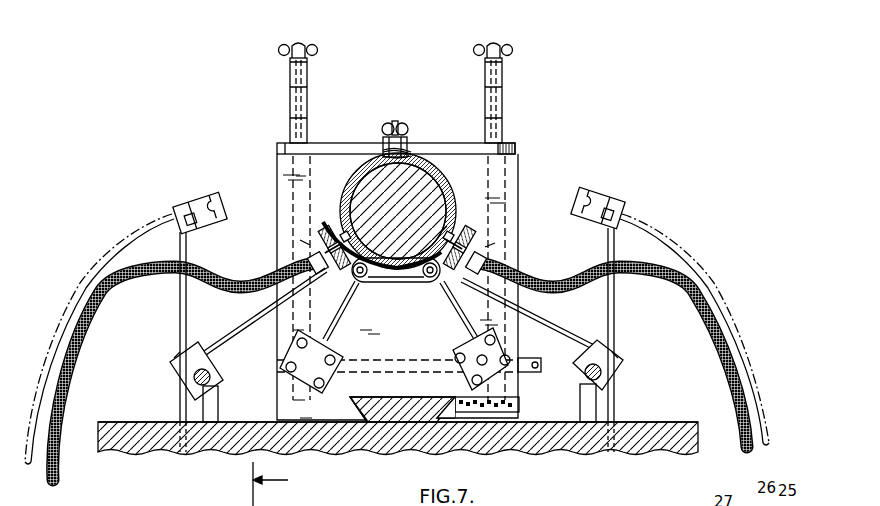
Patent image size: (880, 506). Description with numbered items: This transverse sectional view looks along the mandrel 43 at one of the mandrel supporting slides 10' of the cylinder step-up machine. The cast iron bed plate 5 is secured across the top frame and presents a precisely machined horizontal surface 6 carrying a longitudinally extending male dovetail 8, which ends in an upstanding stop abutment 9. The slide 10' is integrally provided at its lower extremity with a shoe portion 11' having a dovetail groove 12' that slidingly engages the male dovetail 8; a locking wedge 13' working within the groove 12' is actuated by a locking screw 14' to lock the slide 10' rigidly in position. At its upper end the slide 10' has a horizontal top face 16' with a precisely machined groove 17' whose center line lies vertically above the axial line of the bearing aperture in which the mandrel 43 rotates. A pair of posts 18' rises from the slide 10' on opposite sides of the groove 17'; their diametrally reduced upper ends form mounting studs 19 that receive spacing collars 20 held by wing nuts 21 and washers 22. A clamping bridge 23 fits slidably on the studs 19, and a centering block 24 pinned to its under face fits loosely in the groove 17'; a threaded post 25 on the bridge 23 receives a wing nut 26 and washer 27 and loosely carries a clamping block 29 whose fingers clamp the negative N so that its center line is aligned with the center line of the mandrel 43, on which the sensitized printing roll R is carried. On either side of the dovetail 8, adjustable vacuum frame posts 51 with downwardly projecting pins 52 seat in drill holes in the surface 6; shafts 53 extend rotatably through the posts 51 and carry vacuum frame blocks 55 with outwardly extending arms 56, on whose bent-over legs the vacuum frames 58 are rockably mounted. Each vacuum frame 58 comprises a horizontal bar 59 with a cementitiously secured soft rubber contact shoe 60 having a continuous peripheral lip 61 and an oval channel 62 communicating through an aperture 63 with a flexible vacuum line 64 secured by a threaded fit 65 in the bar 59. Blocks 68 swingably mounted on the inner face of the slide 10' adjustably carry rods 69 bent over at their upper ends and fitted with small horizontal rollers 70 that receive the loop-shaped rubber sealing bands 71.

The bed plate 5 is at (143, 455).
The horizontal surface 6 is at (140, 422).
The male dovetail 8 is at (402, 400).
The stop abutment 9 is at (277, 484).
The mandrel supporting slide 10' is at (421, 284).
The shoe portion 11' is at (533, 378).
The dovetail groove 12' is at (362, 444).
The locking wedge 13' is at (473, 437).
The locking screw 14' is at (510, 408).
The horizontal top face 16' is at (532, 139).
The groove 17' is at (426, 134).
The post 18' is at (393, 239).
The mounting stud 19 is at (299, 42).
The spacing collar 20 is at (296, 128).
The wing nut 21 is at (279, 51).
The washer 22 is at (290, 61).
The clamping bridge 23 is at (328, 147).
The centering block 24 is at (390, 152).
The threaded post 25 is at (396, 121).
The wing nut 26 is at (405, 125).
The washer 27 is at (408, 152).
The clamping block 29 is at (386, 150).
The mandrel 43 is at (372, 190).
The sensitized printing roll R is at (441, 180).
The negative N is at (343, 199).
The vacuum frame post 51 is at (219, 398).
The pin 52 is at (183, 452).
The shaft 53 is at (212, 376).
The vacuum frame block 55 is at (218, 358).
The arm 56 is at (232, 325).
The vacuum frame 58 is at (186, 198).
The horizontal bar 59 is at (470, 250).
The soft rubber contact shoe 60 is at (338, 234).
The peripheral lip 61 is at (446, 198).
The channel 62 is at (454, 230).
The aperture 63 is at (466, 244).
The flexible vacuum line 64 is at (80, 345).
The threaded fit 65 is at (307, 259).
The block 68 is at (335, 383).
The rod 69 is at (341, 322).
The roller 70 is at (364, 278).
The sealing band 71 is at (397, 283).